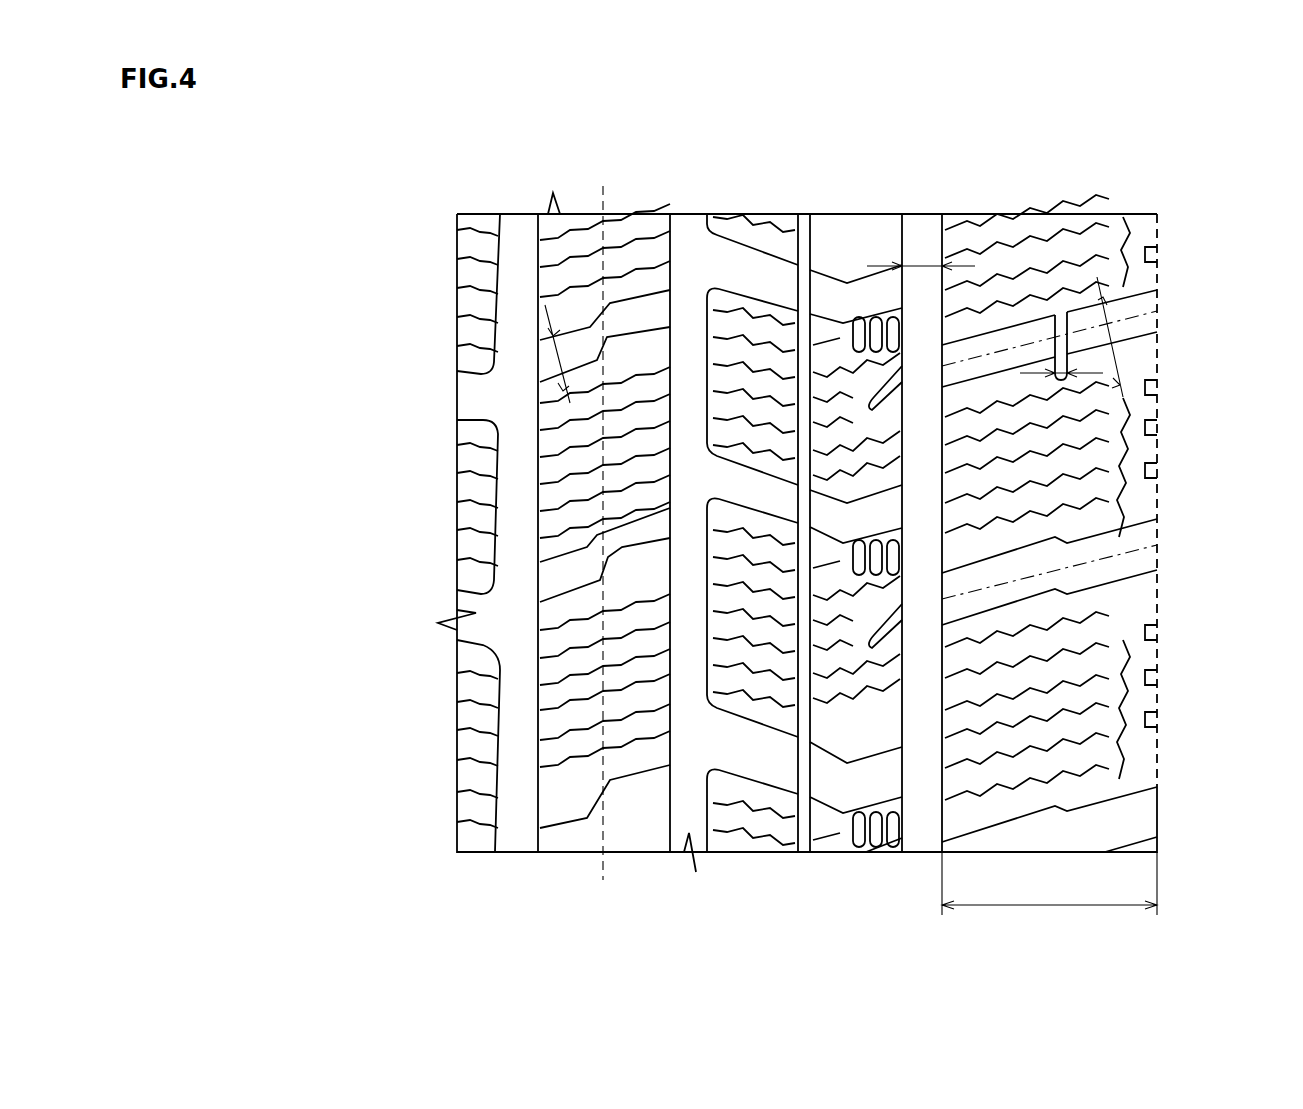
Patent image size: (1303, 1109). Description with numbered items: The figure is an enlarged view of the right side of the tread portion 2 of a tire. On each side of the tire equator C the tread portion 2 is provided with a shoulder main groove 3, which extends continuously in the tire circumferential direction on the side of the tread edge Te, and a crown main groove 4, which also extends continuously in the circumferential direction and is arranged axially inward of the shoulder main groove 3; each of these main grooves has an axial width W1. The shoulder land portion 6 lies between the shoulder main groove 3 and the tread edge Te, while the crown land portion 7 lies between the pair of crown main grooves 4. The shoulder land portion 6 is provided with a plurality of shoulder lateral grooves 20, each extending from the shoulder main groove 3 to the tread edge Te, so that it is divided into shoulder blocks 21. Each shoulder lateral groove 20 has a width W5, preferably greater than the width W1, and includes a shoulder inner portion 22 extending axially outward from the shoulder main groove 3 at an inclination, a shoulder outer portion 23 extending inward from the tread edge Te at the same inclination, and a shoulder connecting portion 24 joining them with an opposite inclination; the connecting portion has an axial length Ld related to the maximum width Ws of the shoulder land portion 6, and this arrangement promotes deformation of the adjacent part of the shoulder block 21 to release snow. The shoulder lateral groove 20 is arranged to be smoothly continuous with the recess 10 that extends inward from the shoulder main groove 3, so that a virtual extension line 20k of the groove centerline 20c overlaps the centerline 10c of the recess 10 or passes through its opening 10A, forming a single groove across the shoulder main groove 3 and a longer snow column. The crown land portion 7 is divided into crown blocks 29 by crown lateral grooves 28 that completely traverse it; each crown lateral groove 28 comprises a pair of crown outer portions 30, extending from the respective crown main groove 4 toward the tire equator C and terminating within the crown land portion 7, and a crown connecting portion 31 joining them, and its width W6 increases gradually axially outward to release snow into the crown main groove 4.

The tread portion 2 is at (1184, 152).
The shoulder main groove 3 is at (927, 228).
The crown main groove 4 is at (524, 230).
The shoulder land portion 6 is at (1114, 497).
The shoulder block 21 is at (1086, 702).
The crown land portion 7 is at (603, 573).
The crown block 29 is at (587, 786).
The recess 10 is at (880, 666).
The opening of recess 10A is at (903, 627).
The centerline of recess 10c is at (877, 630).
The shoulder lateral groove 20 is at (1095, 474).
The groove centerline 20c is at (1132, 552).
The virtual extension line 20k is at (877, 630).
The shoulder inner portion 22 is at (999, 343).
The shoulder outer portion 23 is at (1133, 313).
The shoulder connecting portion 24 is at (1063, 327).
The crown lateral groove 28 is at (487, 559).
The crown outer portion 30 is at (645, 525).
The crown connecting portion 31 is at (598, 548).
The tire equator C is at (602, 518).
The tread edge Te is at (1160, 224).
The width of main groove W1 is at (917, 266).
The width of shoulder lateral groove W5 is at (1128, 330).
The width of crown lateral groove W6 is at (598, 332).
The length of shoulder connecting portion Ld is at (1130, 383).
The maximum width of shoulder land portion Ws is at (1049, 897).